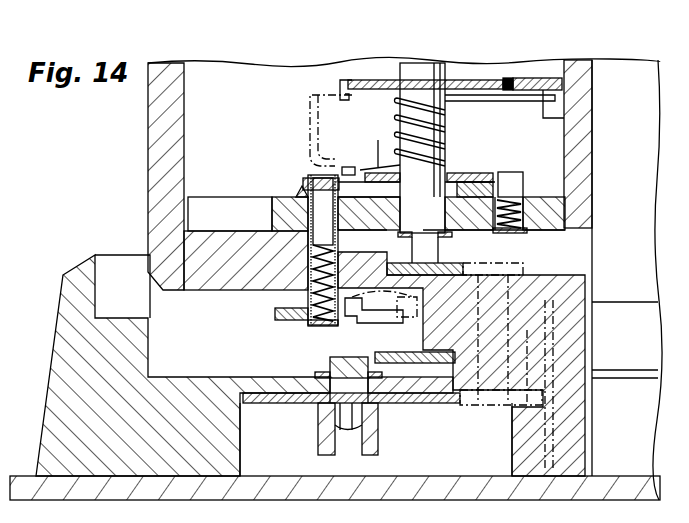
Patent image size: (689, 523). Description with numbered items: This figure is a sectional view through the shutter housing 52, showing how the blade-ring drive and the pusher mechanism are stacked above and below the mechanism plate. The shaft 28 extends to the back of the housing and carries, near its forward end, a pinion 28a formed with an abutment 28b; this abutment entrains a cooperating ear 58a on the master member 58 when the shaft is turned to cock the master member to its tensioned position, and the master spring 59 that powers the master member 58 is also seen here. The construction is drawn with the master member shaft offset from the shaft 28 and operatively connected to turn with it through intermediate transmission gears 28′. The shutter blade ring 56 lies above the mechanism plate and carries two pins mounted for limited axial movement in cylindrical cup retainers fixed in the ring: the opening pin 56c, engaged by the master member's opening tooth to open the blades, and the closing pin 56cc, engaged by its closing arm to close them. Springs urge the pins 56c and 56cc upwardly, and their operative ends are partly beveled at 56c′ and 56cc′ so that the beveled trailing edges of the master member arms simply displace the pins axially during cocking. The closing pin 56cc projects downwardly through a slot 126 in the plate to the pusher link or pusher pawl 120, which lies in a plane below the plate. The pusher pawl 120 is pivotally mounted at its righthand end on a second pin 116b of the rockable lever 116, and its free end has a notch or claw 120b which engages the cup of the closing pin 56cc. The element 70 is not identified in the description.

The shutter housing 52 is at (157, 114).
The shutter blade ring 56 is at (300, 190).
The slot 126 is at (272, 212).
The intermediate transmission gears 28′ is at (440, 390).
The master spring 59 is at (397, 120).
The pinion 28a is at (373, 80).
The abutment 28b is at (340, 82).
The clamp block 70 is at (532, 78).
The abutment or ear 58a is at (308, 100).
The master member 58 is at (460, 174).
The beveled portion of opening pin 56c′ is at (508, 172).
The opening pin 56c is at (514, 190).
The closing pin 56cc is at (312, 173).
The beveled portion of closing pin 56cc′ is at (313, 173).
The pusher link or pusher pawl 120 is at (275, 316).
The notch or claw 120b is at (340, 327).
The rockable lever 116 is at (345, 292).
The second pin 116b is at (372, 312).
The shaft 28 is at (375, 440).